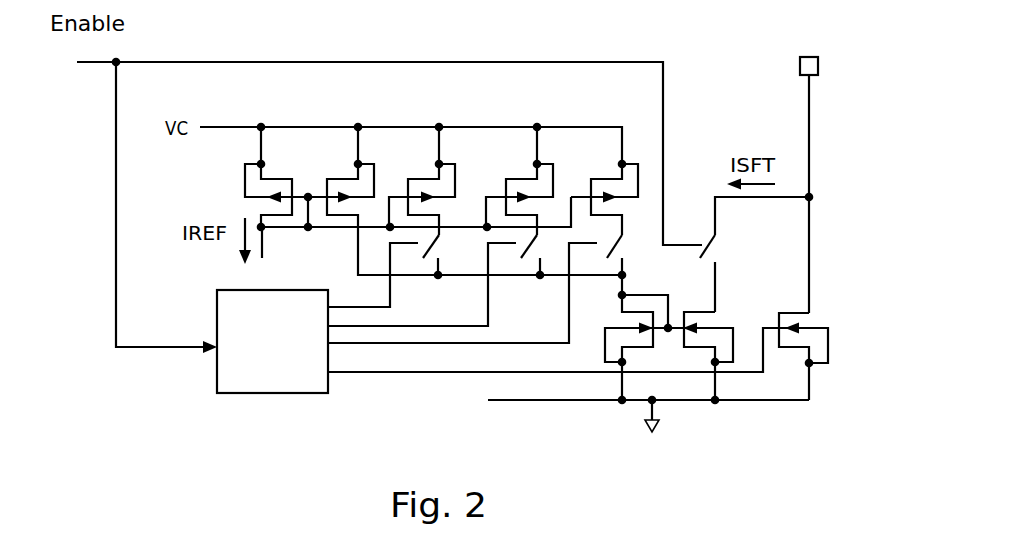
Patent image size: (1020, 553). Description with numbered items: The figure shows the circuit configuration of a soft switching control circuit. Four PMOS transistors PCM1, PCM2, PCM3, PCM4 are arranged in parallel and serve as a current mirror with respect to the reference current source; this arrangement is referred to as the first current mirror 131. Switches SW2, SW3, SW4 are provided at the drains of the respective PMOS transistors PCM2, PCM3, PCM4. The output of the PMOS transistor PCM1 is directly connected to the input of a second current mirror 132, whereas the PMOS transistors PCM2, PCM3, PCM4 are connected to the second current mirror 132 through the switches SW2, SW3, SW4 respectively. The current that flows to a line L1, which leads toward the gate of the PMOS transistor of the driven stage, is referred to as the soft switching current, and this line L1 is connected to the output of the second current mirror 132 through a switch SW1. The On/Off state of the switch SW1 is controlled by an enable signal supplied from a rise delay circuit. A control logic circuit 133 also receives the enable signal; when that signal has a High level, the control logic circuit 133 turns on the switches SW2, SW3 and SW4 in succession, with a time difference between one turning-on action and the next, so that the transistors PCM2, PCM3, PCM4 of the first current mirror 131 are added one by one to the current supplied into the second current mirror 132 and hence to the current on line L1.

The first current mirror 131 is at (234, 177).
The second current mirror 132 is at (728, 313).
The control logic circuit 133 is at (318, 393).
The PMOS transistor PCM1 is at (333, 166).
The PMOS transistor PCM2 is at (416, 166).
The PMOS transistor PCM3 is at (514, 166).
The PMOS transistor PCM4 is at (599, 166).
The switch SW1 is at (720, 251).
The switch SW2 is at (447, 246).
The switch SW3 is at (541, 246).
The switch SW4 is at (630, 236).
The line L1 is at (810, 168).